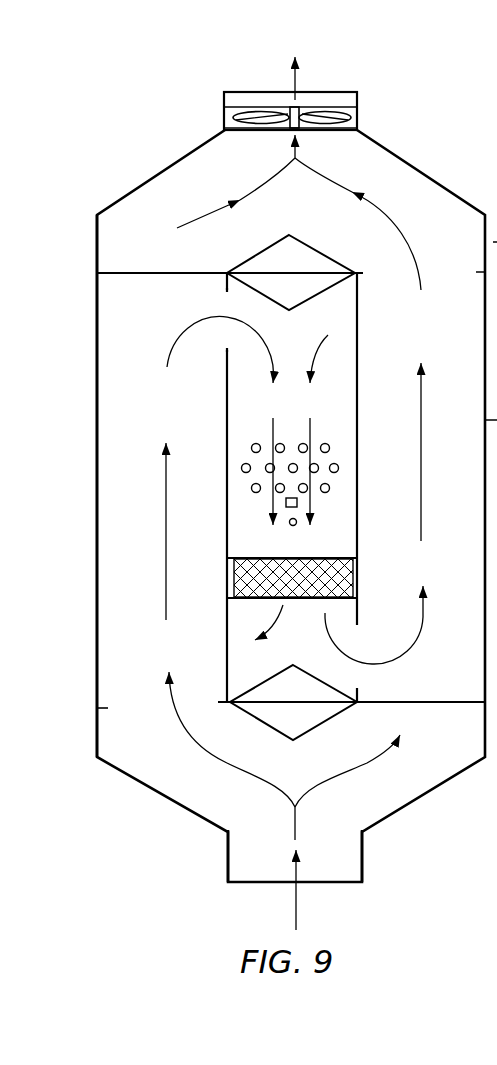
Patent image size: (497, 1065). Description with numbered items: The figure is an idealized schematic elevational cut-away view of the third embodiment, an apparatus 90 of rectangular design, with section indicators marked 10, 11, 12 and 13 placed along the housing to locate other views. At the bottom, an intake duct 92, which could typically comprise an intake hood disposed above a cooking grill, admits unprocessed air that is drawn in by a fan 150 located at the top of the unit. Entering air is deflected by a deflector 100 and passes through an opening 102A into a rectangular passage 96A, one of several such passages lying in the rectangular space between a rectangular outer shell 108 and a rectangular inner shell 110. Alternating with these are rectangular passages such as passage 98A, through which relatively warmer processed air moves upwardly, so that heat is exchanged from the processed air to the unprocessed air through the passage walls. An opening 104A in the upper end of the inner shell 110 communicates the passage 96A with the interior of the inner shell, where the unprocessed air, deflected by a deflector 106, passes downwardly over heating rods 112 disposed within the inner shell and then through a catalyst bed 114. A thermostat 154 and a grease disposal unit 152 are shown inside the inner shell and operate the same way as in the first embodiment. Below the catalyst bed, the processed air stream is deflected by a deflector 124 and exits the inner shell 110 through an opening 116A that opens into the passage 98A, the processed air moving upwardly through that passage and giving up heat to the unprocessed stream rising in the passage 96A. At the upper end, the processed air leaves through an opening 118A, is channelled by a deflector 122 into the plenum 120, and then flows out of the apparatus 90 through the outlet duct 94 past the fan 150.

The apparatus 90 is at (128, 180).
The intake duct 92 is at (343, 882).
The outlet duct 94 is at (328, 92).
The fan 150 is at (347, 118).
The plenum 120 is at (308, 216).
The deflector 122 is at (307, 243).
The opening 118A is at (440, 272).
The opening 104A is at (235, 310).
The deflector 106 is at (337, 297).
The rectangular passage 96A is at (192, 401).
The rectangular passage 98A is at (455, 338).
The inner shell 110 is at (227, 480).
The heating rods 112 is at (330, 447).
The thermostat 154 is at (298, 502).
The grease disposal unit 152 is at (289, 526).
The catalyst bed 114 is at (310, 557).
The opening 116A is at (358, 673).
The deflector 124 is at (318, 677).
The deflector 100 is at (318, 725).
The opening 102A is at (137, 703).
The outer shell 108 is at (97, 563).
The section line 10- 10 is at (270, 82).
The section line 11- 11 is at (90, 245).
The section line 12- 12 is at (90, 728).
The section line 13- 13 is at (90, 426).